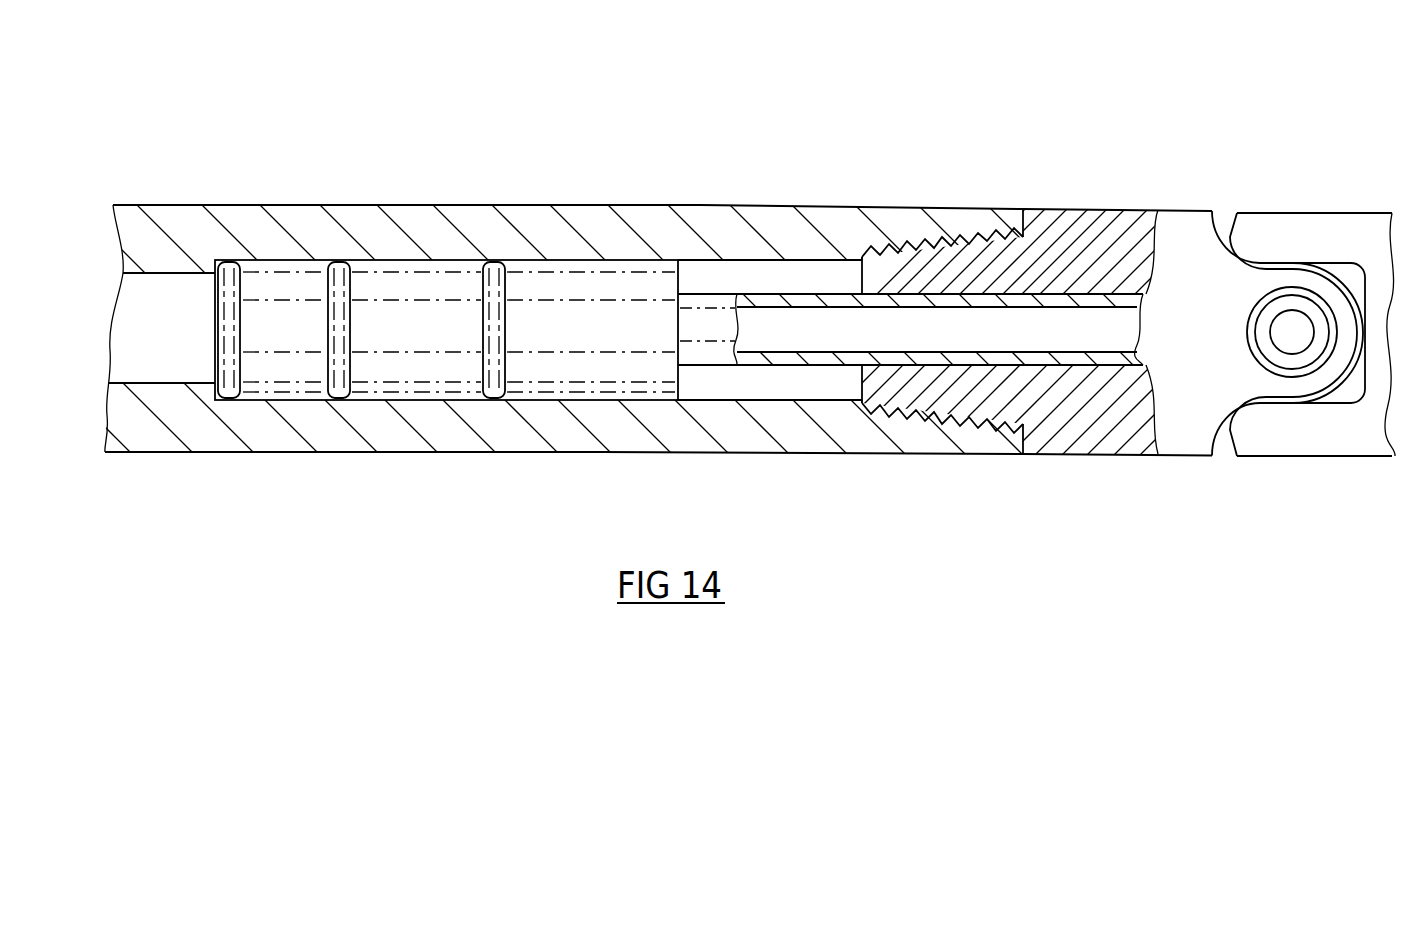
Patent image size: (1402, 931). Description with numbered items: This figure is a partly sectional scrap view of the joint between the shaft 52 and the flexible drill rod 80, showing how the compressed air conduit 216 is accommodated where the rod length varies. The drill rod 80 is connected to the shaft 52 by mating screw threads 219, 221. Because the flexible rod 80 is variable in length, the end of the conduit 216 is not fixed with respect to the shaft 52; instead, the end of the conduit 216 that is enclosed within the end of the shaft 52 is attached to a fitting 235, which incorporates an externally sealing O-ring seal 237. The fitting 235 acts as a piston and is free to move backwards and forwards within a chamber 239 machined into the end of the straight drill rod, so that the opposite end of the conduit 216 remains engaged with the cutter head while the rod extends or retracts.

The shaft 52 is at (186, 190).
The fitting 235 is at (573, 295).
The O-ring seal 237 is at (492, 358).
The chamber 239 is at (762, 385).
The screw thread 221 is at (908, 251).
The compressed air conduit 216 is at (1009, 300).
The screw thread 219 is at (947, 410).
The drill rod 80 is at (1343, 462).